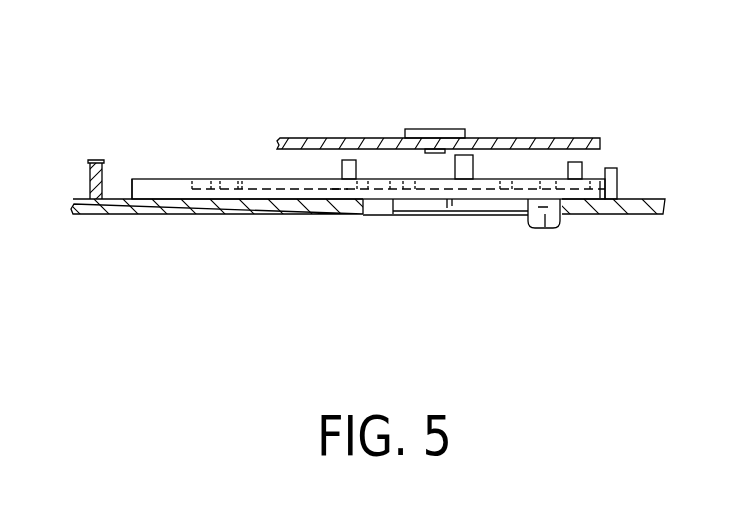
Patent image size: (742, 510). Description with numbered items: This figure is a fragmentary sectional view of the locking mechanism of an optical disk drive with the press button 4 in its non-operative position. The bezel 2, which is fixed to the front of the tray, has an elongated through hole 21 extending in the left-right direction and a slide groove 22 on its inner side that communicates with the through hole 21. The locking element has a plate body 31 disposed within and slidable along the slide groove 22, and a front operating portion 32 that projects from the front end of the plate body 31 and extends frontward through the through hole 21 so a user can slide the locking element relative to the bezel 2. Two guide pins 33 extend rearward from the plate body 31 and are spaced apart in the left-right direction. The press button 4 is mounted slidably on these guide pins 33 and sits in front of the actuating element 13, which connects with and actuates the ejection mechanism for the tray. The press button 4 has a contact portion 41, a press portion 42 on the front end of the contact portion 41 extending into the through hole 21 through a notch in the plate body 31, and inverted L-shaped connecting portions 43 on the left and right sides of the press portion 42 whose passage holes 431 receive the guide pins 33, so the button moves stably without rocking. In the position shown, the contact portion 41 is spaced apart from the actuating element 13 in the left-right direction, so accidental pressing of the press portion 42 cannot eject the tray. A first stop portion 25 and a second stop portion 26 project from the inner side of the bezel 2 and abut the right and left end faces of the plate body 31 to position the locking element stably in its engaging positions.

The bezel 2 is at (655, 220).
The press button 4 is at (475, 225).
The actuating element 13 is at (455, 128).
The through hole 21 is at (372, 203).
The slide groove 22 is at (118, 185).
The first stop portion 25 is at (612, 168).
The second stop portion 26 is at (93, 180).
The plate body 31 is at (603, 197).
The front operating portion 32 is at (543, 226).
The guide pins 33 is at (348, 160).
The contact portion 41 is at (473, 160).
The press portion 42 is at (440, 208).
The connecting portions 43 is at (612, 183).
The passage holes 431 is at (330, 198).